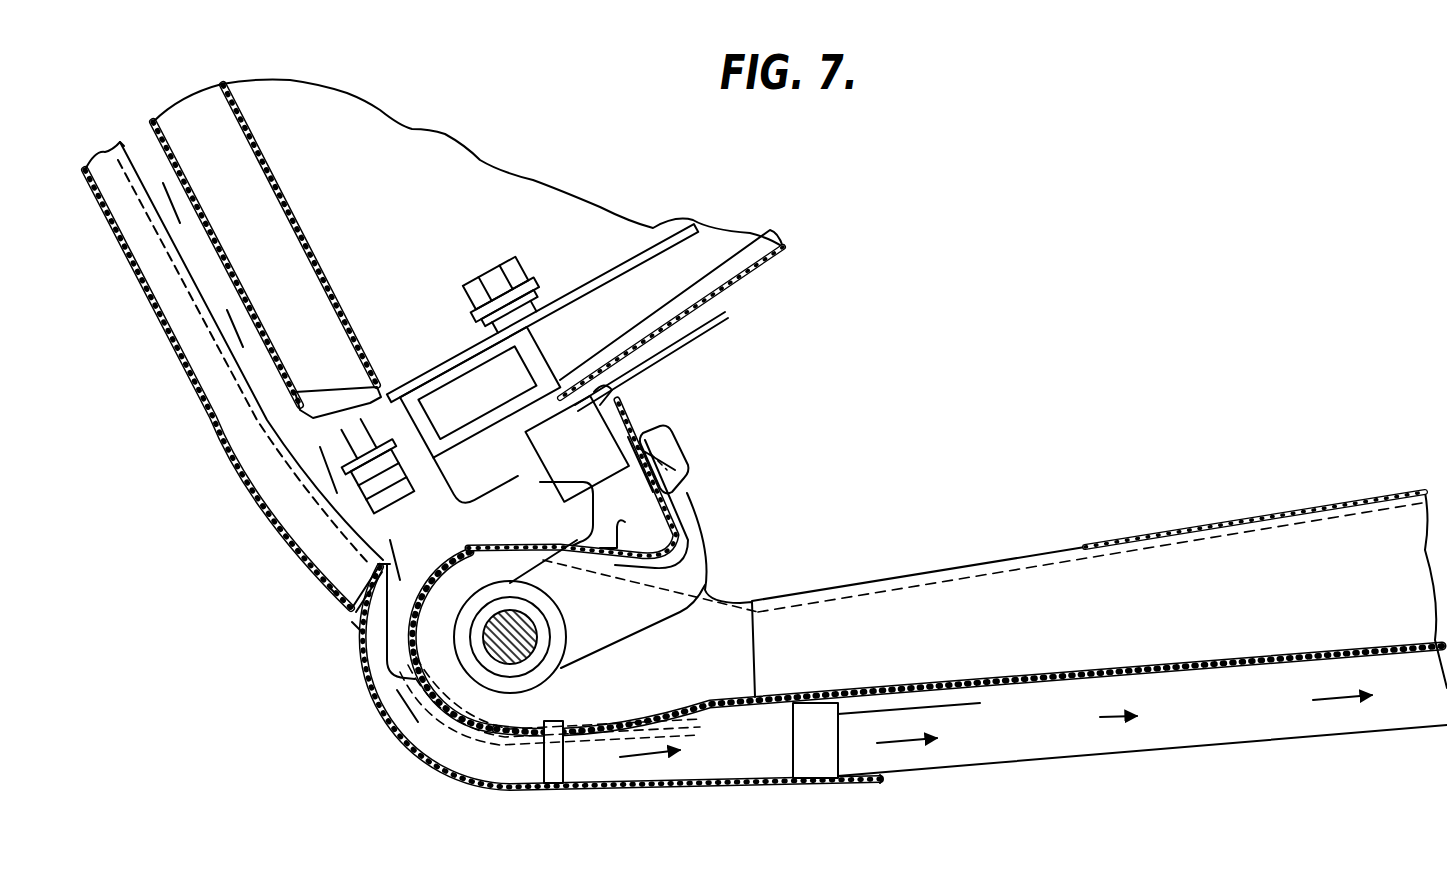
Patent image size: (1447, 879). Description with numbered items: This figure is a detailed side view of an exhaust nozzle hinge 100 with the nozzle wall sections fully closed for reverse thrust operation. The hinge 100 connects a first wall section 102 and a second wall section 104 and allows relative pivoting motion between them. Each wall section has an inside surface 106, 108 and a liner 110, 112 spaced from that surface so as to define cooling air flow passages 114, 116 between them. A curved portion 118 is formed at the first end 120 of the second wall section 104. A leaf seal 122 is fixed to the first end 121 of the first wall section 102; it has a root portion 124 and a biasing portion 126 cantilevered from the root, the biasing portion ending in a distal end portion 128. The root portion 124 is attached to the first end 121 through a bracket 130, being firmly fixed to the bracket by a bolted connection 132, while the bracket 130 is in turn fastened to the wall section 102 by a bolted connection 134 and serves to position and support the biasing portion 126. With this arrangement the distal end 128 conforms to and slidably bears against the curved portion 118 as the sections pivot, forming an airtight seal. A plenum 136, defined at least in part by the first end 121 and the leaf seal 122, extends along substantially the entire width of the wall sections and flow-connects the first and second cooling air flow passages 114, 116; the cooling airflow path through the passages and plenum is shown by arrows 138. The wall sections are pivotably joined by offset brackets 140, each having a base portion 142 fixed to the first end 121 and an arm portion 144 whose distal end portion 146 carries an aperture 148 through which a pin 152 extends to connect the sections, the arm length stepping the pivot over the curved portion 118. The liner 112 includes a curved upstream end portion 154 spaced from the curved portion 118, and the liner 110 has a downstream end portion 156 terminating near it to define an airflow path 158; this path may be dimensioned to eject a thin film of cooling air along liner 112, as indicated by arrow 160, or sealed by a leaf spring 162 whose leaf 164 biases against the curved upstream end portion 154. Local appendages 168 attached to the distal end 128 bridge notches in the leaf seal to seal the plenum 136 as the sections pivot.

The hinge 100 is at (742, 440).
The first wall section 102 is at (268, 232).
The second wall section 104 is at (1075, 565).
The inside surface 106 is at (208, 235).
The inside surface 108 is at (1182, 677).
The liner 110 is at (120, 257).
The liner 112 is at (1175, 748).
The cooling air flow passage 114 is at (203, 283).
The cooling air flow passage 116 is at (1020, 720).
The curved portion 118 is at (467, 556).
The first end 120 is at (580, 700).
The first end 121 is at (580, 318).
The leaf seal 122 is at (670, 527).
The root portion 124 is at (634, 427).
The biasing portion 126 is at (610, 547).
The distal end portion 128 is at (530, 520).
The bracket 130 is at (687, 543).
The bolted connection 132 is at (668, 448).
The bolted connection 134 is at (598, 405).
The plenum 136 is at (470, 450).
The arrows 138 is at (170, 180).
The bracket 140 is at (590, 522).
The base portion 142 is at (627, 367).
The arm portion 144 is at (627, 612).
The distal end portion 146 is at (498, 687).
The aperture 148 is at (528, 625).
The pin 152 is at (530, 655).
The curved upstream end portion 154 is at (400, 752).
The downstream end portion 156 is at (350, 612).
The airflow path 158 is at (362, 600).
The arrow 160 is at (347, 645).
The leaf spring 162 is at (333, 590).
The leaf 164 is at (355, 627).
The local appendage 168 is at (500, 530).